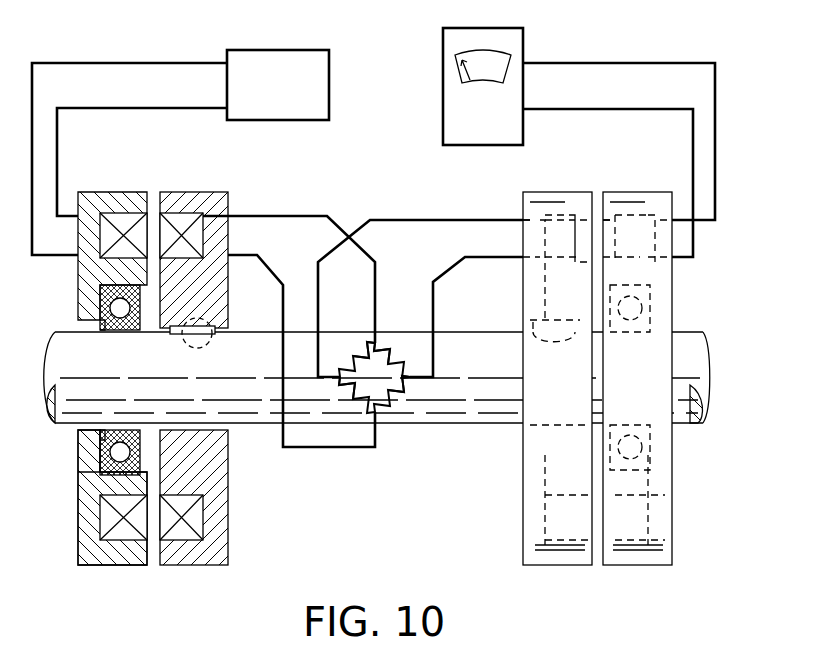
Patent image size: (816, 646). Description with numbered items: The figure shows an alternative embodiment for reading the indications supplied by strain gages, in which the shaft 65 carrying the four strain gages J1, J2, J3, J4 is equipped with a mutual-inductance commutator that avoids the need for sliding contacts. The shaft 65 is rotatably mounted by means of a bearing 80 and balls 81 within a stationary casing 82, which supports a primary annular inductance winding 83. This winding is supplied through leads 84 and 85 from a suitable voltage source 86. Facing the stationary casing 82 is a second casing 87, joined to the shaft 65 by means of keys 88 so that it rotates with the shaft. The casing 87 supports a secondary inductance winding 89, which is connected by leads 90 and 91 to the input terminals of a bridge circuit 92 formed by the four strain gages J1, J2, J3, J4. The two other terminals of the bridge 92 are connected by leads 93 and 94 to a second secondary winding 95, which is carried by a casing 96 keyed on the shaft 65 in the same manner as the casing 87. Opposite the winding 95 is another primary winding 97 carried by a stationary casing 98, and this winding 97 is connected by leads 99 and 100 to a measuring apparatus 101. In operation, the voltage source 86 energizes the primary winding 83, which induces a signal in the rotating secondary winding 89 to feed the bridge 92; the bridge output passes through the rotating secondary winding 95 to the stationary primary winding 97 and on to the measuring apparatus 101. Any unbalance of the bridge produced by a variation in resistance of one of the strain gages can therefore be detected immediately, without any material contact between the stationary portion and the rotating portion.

The shaft 65 is at (688, 424).
The bearing 80 is at (100, 332).
The balls 81 is at (122, 333).
The stationary casing 82 is at (90, 278).
The primary annular inductance winding 83 is at (118, 214).
The lead 84 is at (172, 108).
The lead 85 is at (85, 62).
The voltage source 86 is at (288, 92).
The second casing 87 is at (212, 200).
The keys 88 is at (200, 335).
The secondary inductance winding 89 is at (184, 214).
The lead 90 is at (293, 218).
The lead 91 is at (287, 290).
The bridge circuit 92 is at (380, 416).
The lead 93 is at (480, 255).
The lead 94 is at (426, 219).
The second secondary winding 95 is at (574, 215).
The casing 96 is at (535, 552).
The primary winding 97 is at (648, 215).
The stationary casing 98 is at (660, 552).
The lead 99 is at (567, 108).
The lead 100 is at (645, 62).
The measuring apparatus 101 is at (500, 128).
The strain gage J1 is at (356, 350).
The strain gage J2 is at (347, 402).
The strain gage J3 is at (400, 395).
The strain gage J4 is at (395, 350).